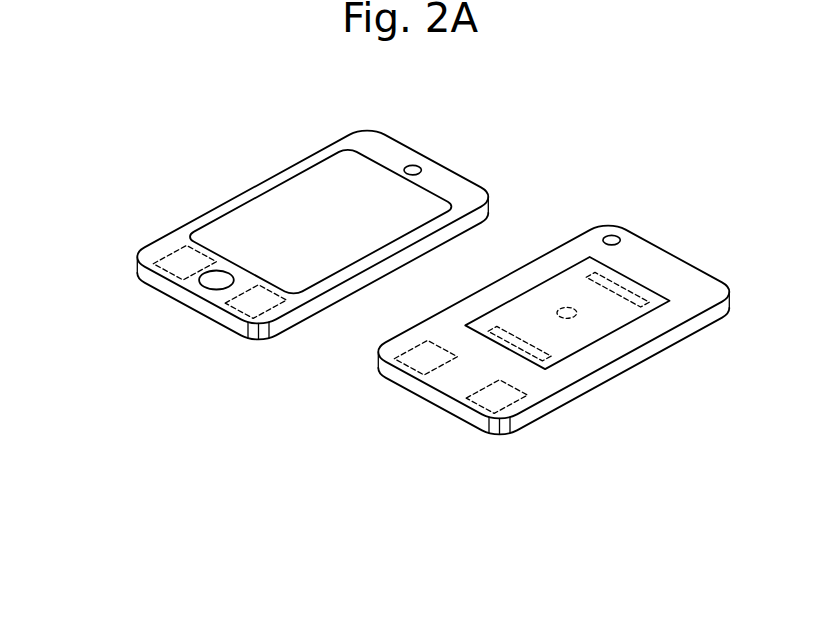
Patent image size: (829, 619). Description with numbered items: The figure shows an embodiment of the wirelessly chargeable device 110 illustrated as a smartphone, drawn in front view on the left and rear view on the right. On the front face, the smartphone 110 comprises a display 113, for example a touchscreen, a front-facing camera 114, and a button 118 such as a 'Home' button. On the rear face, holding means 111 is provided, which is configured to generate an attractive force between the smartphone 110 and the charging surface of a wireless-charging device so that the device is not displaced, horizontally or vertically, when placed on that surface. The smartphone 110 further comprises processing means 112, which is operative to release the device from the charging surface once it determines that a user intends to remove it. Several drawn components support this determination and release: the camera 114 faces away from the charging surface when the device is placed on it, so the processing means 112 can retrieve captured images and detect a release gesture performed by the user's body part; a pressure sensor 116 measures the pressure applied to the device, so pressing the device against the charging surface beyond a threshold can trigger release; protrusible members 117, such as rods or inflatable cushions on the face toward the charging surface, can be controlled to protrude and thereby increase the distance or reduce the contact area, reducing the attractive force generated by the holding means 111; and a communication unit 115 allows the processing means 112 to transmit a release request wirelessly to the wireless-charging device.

The wirelessly chargeable device 110 is at (163, 163).
The holding means 111 is at (553, 277).
The processing means 112 is at (482, 403).
The display 113 is at (281, 196).
The front-facing camera 114 is at (420, 165).
The communication unit 115 is at (412, 360).
The pressure sensor 116 is at (578, 315).
The protrusible members 117 is at (657, 310).
The button 118 is at (213, 287).